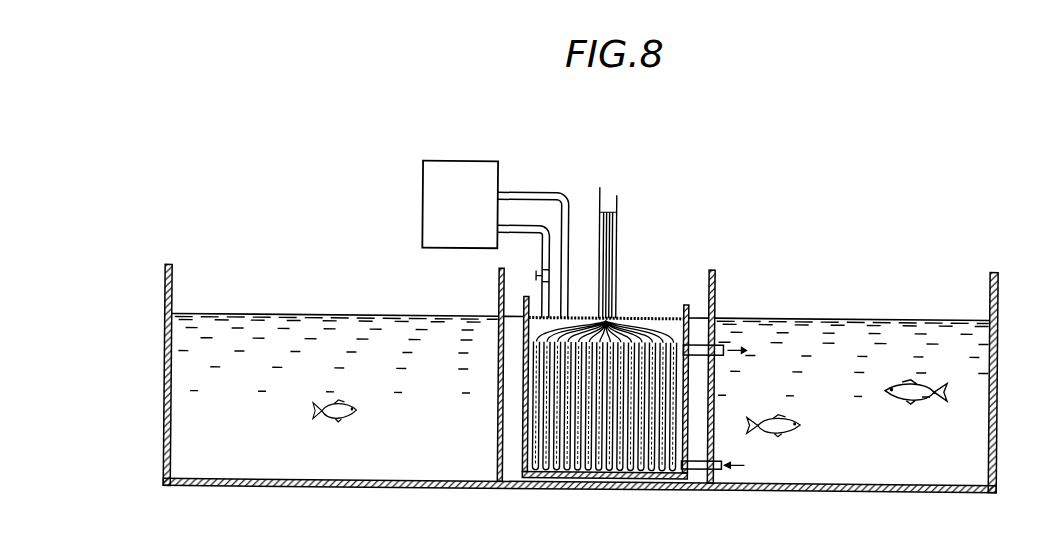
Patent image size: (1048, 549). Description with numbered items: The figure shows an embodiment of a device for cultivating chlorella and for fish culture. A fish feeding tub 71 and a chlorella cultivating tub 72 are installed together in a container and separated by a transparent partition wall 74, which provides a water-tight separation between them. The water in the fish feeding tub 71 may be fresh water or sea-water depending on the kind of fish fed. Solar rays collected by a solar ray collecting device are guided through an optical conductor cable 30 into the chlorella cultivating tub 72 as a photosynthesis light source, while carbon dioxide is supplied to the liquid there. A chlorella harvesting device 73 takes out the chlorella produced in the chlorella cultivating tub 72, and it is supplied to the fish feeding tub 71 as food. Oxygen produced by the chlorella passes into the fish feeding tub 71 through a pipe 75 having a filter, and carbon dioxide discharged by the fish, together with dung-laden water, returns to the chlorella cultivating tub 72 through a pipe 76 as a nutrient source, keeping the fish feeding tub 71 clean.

The optical conductor cable 30 is at (613, 201).
The fish feeding tub 71 is at (997, 289).
The chlorella cultivating tub 72 is at (647, 316).
The chlorella harvesting device 73 is at (483, 171).
The transparent partition wall 74 is at (715, 272).
The pipe 75 is at (700, 343).
The pipe 76 is at (700, 469).